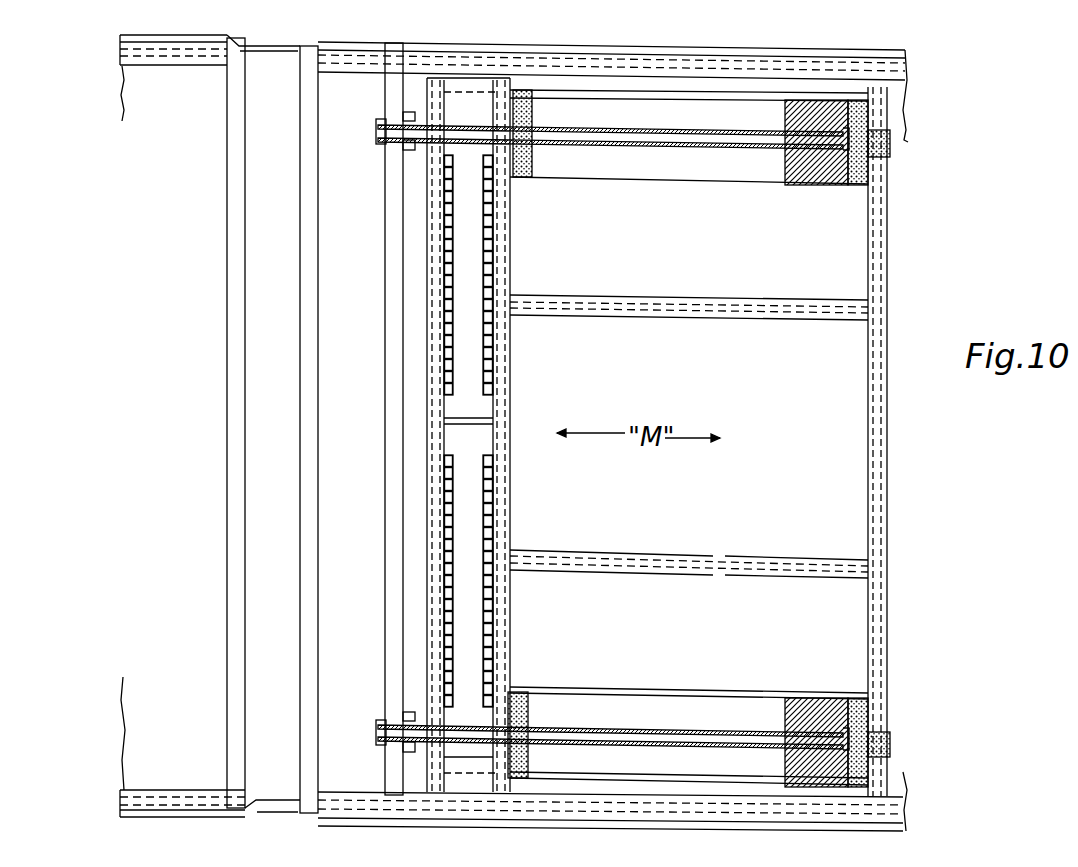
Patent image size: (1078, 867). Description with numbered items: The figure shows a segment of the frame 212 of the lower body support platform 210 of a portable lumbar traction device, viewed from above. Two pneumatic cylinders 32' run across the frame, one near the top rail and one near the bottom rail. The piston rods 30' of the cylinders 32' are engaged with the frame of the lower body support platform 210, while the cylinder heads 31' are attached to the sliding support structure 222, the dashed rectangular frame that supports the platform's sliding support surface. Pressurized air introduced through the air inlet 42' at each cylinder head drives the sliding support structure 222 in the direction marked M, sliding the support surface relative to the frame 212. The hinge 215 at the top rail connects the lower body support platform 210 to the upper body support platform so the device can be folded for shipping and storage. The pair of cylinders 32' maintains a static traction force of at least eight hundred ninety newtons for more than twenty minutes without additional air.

The lower body support platform 210 is at (897, 50).
The frame 212 is at (448, 831).
The hinge 215 is at (291, 47).
The sliding support structure 222 is at (882, 481).
The piston rod 30' is at (599, 432).
The cylinder head 31' is at (730, 438).
The pneumatic cylinder 32' is at (689, 437).
The air inlet 42' is at (909, 443).